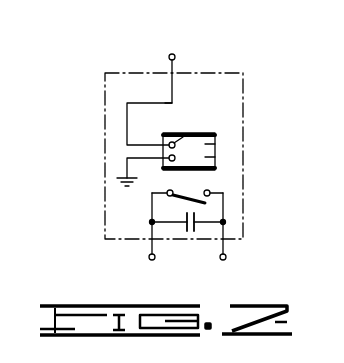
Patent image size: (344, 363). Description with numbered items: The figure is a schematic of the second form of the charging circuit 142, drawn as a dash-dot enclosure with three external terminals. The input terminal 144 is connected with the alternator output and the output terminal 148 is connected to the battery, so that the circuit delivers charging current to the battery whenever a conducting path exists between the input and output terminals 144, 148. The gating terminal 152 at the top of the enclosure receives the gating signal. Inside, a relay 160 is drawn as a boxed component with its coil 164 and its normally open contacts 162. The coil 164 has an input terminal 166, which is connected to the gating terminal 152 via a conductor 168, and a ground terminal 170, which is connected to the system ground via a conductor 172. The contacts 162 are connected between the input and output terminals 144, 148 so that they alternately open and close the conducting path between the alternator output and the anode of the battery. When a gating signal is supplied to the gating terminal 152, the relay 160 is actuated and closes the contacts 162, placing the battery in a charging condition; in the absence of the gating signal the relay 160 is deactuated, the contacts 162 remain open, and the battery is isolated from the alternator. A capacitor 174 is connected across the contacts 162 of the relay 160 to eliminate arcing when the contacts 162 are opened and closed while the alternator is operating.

The charging circuit 142 is at (200, 73).
The gating terminal 152 is at (172, 54).
The conductor 168 is at (158, 107).
The input terminal 166 is at (184, 134).
The conductor 172 is at (167, 147).
The ground terminal 170 is at (166, 161).
The relay 160 is at (217, 142).
The coil 164 is at (215, 157).
The normally open contacts 162 is at (226, 192).
The capacitor 174 is at (192, 234).
The output terminal 148 is at (148, 261).
The input terminal 144 is at (227, 256).